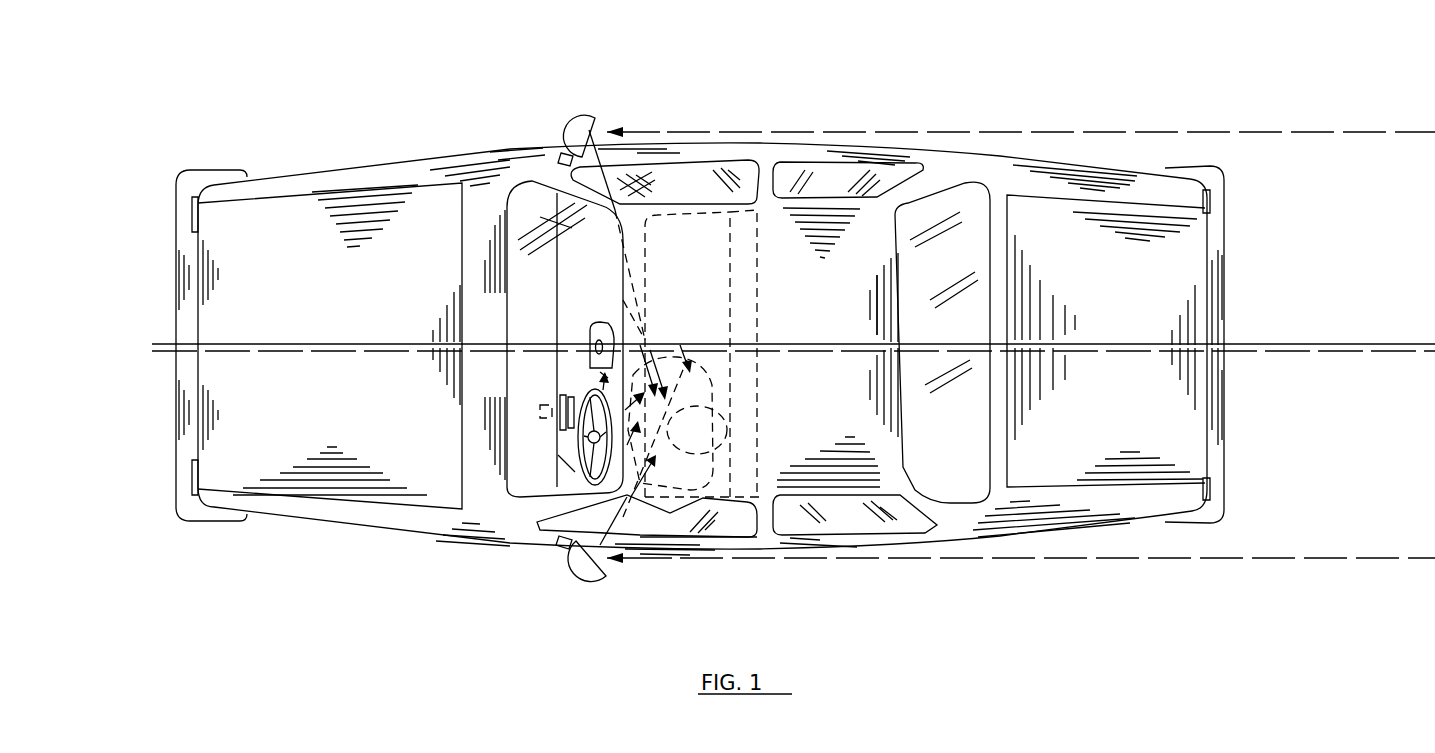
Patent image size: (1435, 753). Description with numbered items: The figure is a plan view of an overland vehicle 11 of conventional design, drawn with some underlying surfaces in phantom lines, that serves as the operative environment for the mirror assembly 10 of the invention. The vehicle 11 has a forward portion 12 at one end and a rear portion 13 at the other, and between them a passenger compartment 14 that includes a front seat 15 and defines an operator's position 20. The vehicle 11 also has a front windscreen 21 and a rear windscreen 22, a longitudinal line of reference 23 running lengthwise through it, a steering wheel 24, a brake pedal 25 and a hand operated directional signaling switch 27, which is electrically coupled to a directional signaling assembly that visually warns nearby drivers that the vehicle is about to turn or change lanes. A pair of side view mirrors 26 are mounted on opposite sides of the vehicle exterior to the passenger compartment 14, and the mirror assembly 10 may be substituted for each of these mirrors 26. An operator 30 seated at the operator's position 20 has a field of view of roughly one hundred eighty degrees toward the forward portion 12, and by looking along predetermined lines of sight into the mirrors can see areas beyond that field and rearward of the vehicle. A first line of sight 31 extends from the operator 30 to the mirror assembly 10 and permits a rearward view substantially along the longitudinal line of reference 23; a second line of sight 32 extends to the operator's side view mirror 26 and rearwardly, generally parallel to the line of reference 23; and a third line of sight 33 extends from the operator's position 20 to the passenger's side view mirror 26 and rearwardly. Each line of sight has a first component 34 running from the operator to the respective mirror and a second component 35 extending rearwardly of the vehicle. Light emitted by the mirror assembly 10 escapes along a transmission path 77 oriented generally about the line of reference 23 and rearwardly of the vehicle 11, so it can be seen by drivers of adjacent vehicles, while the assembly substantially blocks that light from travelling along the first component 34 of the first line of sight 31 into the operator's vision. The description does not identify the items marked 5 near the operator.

The detection signals 5 is at (656, 420).
The mirror assembly 10 is at (590, 324).
The overland vehicle 11 is at (410, 133).
The forward portion 12 is at (283, 217).
The rear portion 13 is at (1115, 183).
The passenger compartment 14 is at (707, 230).
The front seat 15 is at (723, 210).
The operator's position 20 is at (736, 424).
The front windscreen 21 is at (547, 442).
The rear windscreen 22 is at (963, 412).
The longitudinal line of reference 23 is at (227, 343).
The steering wheel 24 is at (595, 478).
The brake pedal 25 is at (555, 393).
The side view mirrors 26 is at (568, 132).
The hand operated directional signaling switch 27 is at (553, 463).
The operator 30 is at (710, 444).
The first line of sight 31 is at (609, 374).
The second line of sight 32 is at (680, 548).
The third line of sight 33 is at (623, 270).
The first component 34 is at (632, 274).
The second component 35 is at (853, 133).
The transmission path 77 is at (888, 352).